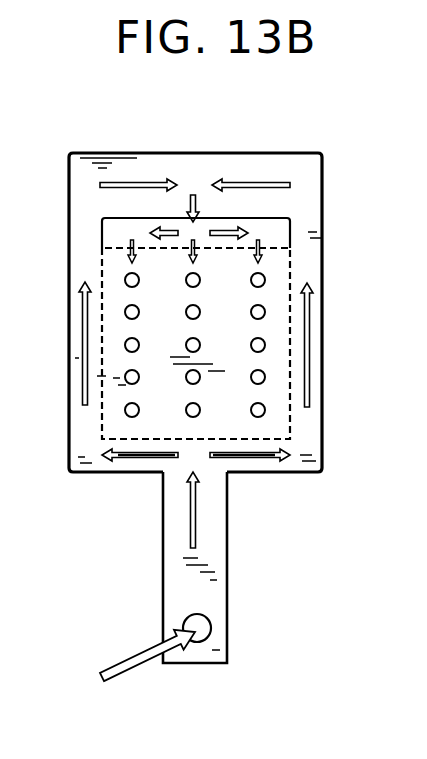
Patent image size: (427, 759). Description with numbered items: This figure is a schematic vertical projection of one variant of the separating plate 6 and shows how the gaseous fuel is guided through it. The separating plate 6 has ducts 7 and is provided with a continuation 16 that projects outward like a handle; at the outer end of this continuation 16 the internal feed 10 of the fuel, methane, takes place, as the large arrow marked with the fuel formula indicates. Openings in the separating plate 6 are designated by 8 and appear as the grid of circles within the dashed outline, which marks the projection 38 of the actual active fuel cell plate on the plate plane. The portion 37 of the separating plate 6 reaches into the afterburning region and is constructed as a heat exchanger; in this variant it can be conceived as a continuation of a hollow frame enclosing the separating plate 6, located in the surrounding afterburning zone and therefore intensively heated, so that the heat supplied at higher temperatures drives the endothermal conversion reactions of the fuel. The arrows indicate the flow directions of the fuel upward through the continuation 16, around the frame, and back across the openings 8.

The separating plate 6 is at (322, 355).
The ducts 7 is at (165, 500).
The openings 8 is at (126, 374).
The internal feed 10 is at (183, 622).
The continuation 16 is at (163, 563).
The portion 37 is at (113, 165).
The projection of the active fuel cell plate 38 is at (107, 437).